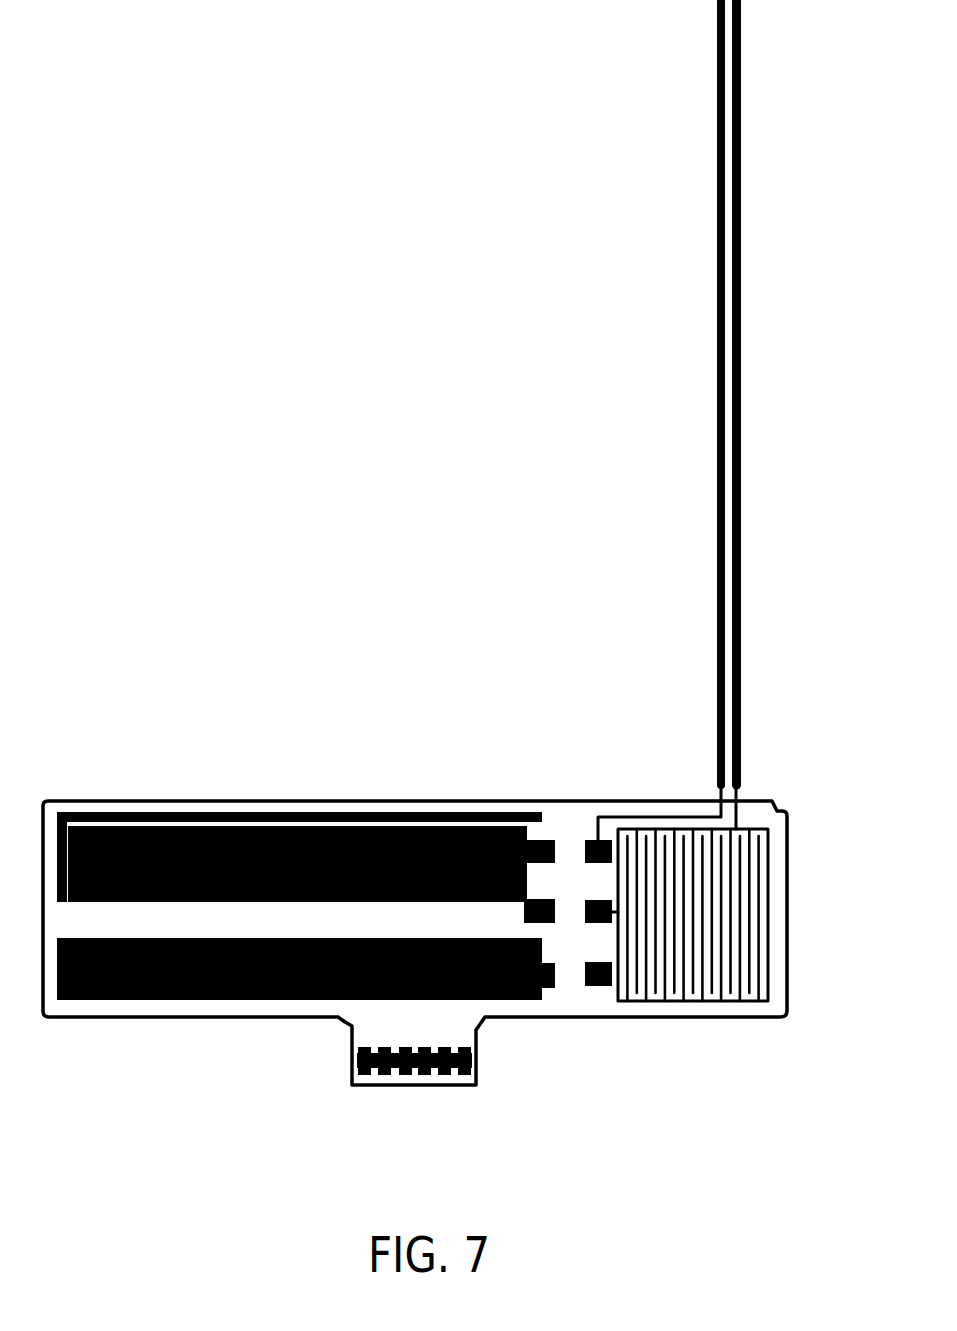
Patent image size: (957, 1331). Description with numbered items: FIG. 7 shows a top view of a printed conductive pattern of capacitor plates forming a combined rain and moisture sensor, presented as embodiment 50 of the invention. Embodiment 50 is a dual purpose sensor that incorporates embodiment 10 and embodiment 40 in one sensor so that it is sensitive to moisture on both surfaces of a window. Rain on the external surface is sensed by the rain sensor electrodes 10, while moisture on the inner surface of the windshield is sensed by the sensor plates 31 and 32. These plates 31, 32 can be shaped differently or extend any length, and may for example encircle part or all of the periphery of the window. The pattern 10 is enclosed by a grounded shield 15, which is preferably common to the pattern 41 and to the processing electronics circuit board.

The rain sensor electrodes 10 is at (193, 828).
The grounded shield 15 is at (415, 800).
The sensor plate 31 is at (717, 518).
The sensor plate 32 is at (740, 540).
The embodiment 40 is at (605, 933).
The pattern 41 is at (715, 905).
The embodiment 50 is at (322, 518).